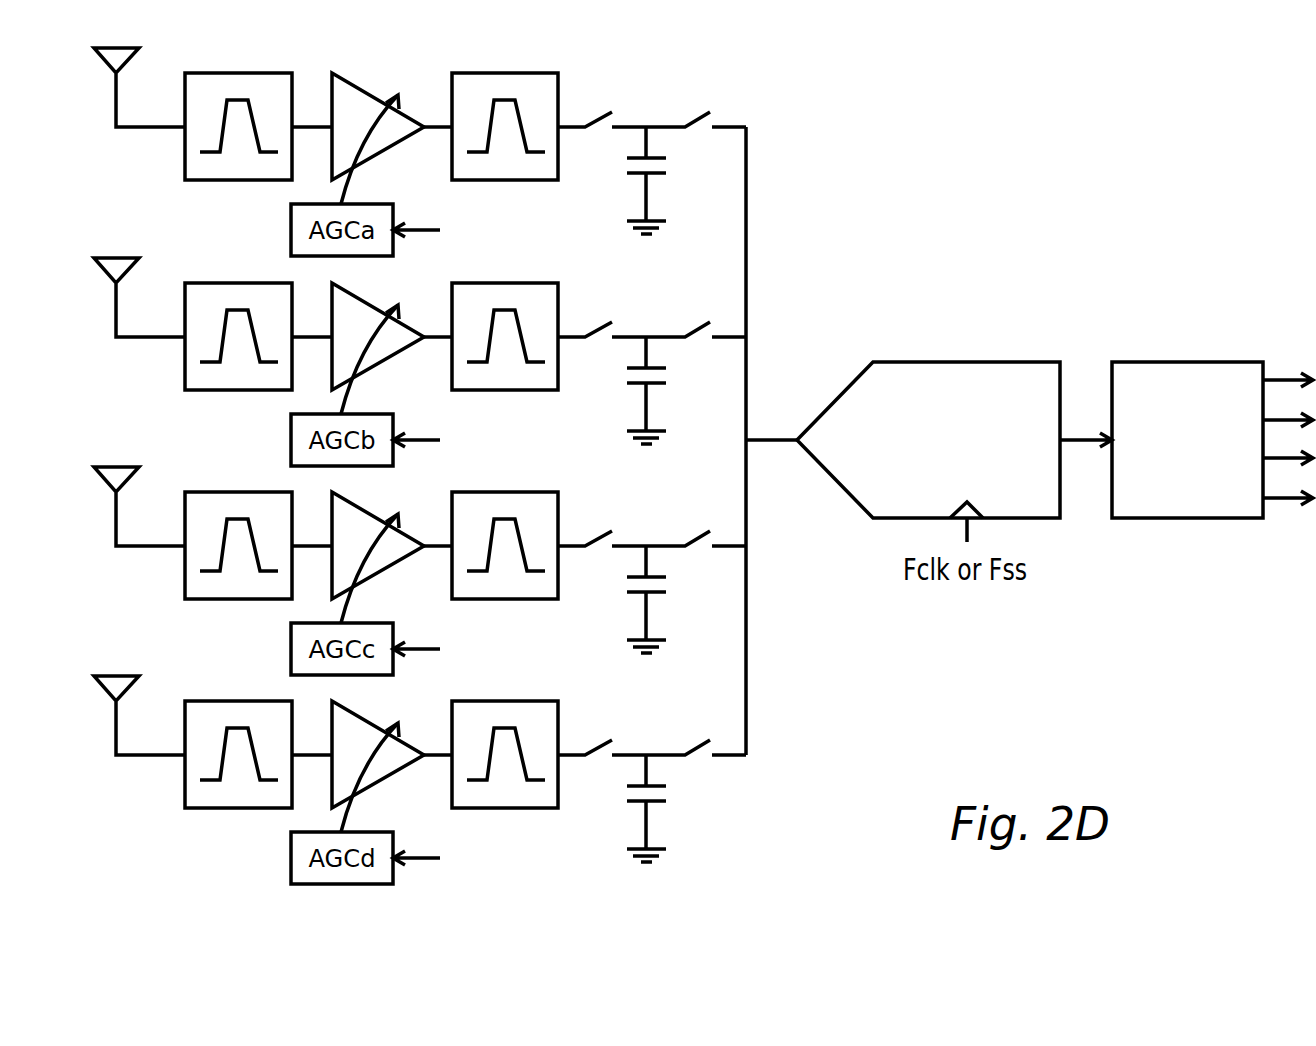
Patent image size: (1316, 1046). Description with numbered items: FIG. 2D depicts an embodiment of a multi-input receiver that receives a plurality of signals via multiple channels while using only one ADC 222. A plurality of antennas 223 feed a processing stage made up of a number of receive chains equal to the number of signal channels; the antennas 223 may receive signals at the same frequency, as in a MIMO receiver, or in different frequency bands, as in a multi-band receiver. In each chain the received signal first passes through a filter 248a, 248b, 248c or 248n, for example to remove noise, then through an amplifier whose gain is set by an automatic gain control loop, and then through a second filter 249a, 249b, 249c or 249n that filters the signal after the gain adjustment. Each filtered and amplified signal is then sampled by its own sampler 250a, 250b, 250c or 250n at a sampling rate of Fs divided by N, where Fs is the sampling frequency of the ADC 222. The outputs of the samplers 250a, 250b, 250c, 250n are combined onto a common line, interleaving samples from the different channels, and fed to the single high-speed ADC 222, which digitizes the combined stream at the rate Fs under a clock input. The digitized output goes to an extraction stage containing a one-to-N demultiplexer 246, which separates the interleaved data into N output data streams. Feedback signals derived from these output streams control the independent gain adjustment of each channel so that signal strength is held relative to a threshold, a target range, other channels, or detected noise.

The antennas 223 is at (122, 401).
The filter 248a is at (235, 106).
The filter 248b is at (235, 316).
The filter 248c is at (235, 525).
The filter 248n is at (235, 734).
The filter 249a is at (505, 106).
The filter 249b is at (505, 316).
The filter 249c is at (505, 525).
The filter 249n is at (505, 734).
The sampler 250a is at (652, 151).
The sampler 250b is at (652, 361).
The sampler 250c is at (652, 570).
The sampler 250n is at (652, 779).
The ADC 222 is at (928, 452).
The demultiplexer 246 is at (1212, 440).